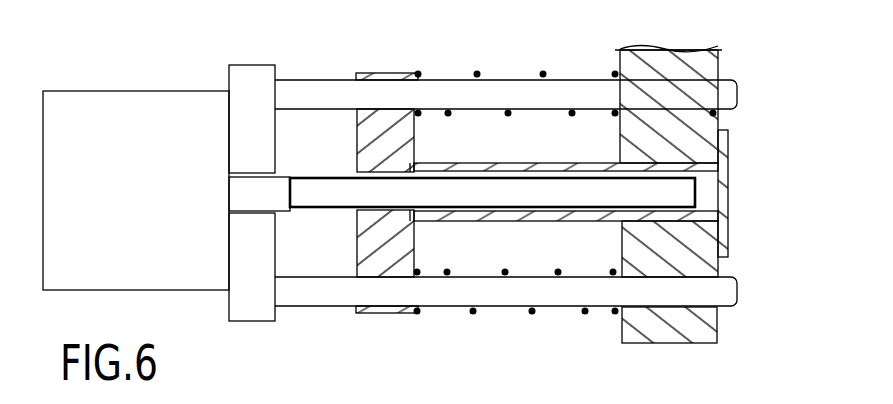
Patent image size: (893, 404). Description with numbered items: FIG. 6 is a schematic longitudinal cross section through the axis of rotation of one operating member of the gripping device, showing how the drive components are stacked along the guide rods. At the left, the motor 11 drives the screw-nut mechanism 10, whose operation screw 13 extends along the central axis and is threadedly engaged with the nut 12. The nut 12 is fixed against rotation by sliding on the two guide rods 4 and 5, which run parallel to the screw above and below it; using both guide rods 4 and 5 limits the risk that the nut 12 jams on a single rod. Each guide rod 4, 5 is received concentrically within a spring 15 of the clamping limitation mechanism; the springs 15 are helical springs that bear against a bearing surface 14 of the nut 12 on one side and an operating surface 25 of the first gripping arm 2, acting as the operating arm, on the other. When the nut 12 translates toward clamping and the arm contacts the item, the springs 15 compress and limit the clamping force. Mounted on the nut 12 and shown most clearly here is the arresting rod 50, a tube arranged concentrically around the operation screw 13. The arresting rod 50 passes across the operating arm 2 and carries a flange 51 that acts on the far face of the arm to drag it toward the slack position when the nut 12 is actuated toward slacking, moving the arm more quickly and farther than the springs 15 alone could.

The first gripping arm 2 is at (667, 327).
The first guide rod 4 is at (294, 103).
The second guide rod 5 is at (306, 292).
The screw-nut mechanism 10 is at (385, 38).
The motor 11 is at (95, 125).
The nut 12 is at (386, 73).
The operation screw 13 is at (338, 192).
The bearing surface 14 is at (418, 145).
The springs 15 is at (477, 72).
The operating surface 25 is at (620, 147).
The arresting rod 50 is at (550, 220).
The flange 51 is at (735, 178).